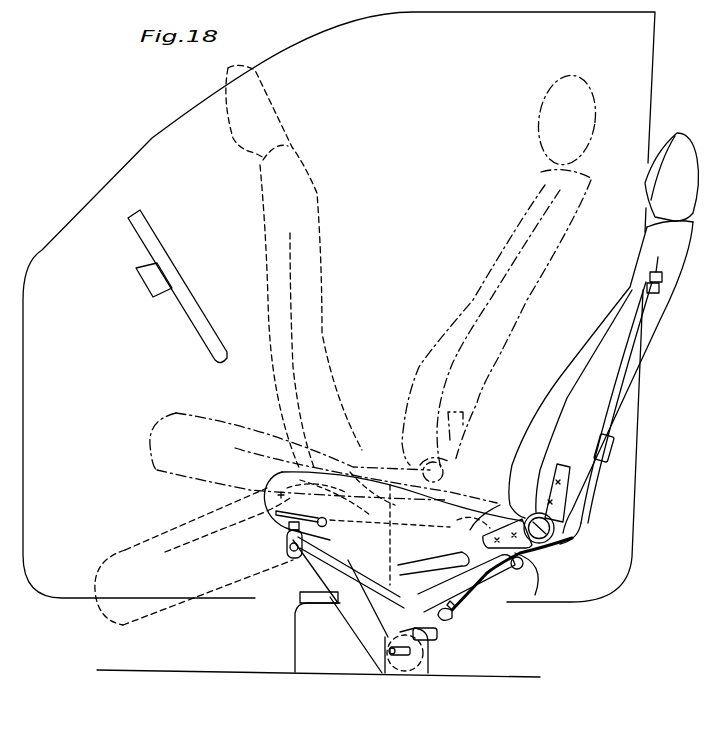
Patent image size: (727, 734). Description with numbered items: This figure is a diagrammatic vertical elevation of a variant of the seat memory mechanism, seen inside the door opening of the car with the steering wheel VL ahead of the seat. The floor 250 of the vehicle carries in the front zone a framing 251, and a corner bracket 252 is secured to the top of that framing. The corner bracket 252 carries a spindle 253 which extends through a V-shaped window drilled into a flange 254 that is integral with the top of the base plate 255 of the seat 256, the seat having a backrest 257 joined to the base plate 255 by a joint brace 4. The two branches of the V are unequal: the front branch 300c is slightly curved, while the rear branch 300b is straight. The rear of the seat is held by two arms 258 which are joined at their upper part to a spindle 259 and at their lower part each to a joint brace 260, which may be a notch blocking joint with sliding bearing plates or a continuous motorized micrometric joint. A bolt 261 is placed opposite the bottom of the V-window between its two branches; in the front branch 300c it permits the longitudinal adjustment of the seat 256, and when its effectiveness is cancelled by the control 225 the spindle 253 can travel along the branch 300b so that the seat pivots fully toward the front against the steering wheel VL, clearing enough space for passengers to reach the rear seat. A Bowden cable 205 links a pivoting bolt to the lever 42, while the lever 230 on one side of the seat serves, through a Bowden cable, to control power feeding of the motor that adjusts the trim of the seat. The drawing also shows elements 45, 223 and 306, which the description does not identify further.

The joint brace 4 is at (554, 465).
The lever 42 is at (440, 643).
The belt guide 45 is at (580, 527).
The Bowden cable 205 is at (362, 603).
The pivot bolt 223 is at (397, 660).
The control 225 is at (648, 277).
The lever 230 is at (285, 480).
The floor 250 is at (140, 672).
The framing 251 is at (296, 652).
The corner bracket 252 is at (305, 603).
The spindle 253 is at (287, 543).
The flange 254 is at (320, 568).
The base plate 255 is at (357, 440).
The seat 256 is at (388, 393).
The backrest 257 is at (302, 234).
The arms 258 is at (426, 522).
The spindle 259 is at (548, 560).
The joint brace 260 is at (428, 663).
The bolt 261 is at (470, 603).
The branch of the V-window 300b is at (490, 496).
The branch of the V-window 300c is at (287, 556).
The seat belt 306 is at (583, 500).
The steering wheel VL is at (158, 262).